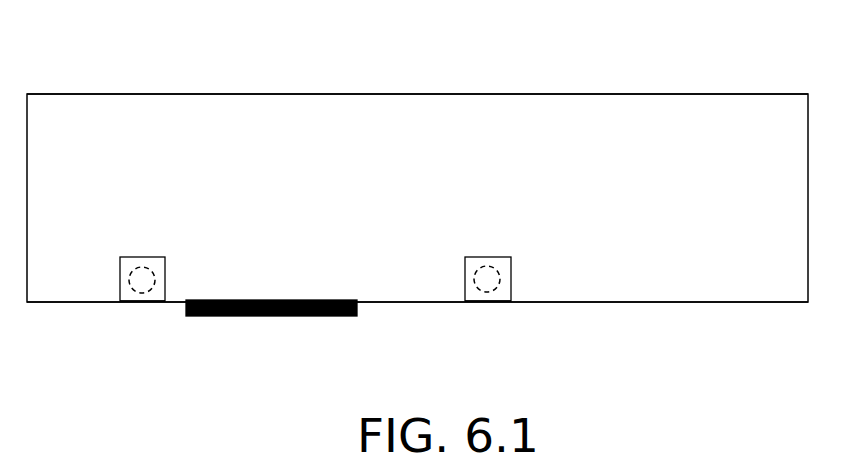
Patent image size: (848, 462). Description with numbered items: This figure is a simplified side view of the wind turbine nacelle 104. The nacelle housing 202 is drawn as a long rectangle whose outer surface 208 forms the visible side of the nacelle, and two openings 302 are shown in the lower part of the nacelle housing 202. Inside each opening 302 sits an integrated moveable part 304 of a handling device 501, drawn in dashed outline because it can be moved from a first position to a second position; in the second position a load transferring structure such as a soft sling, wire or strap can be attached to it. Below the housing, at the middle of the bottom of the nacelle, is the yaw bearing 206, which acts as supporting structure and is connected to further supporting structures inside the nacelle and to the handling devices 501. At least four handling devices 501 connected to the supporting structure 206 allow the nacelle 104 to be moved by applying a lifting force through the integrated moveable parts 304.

The wind turbine nacelle 104 is at (143, 48).
The outer surface 208 is at (617, 112).
The nacelle housing 202 is at (680, 302).
The openings 302 is at (162, 257).
The integrated moveable part 304 is at (133, 287).
The handling device 501 is at (148, 316).
The yaw bearing 206 is at (259, 316).